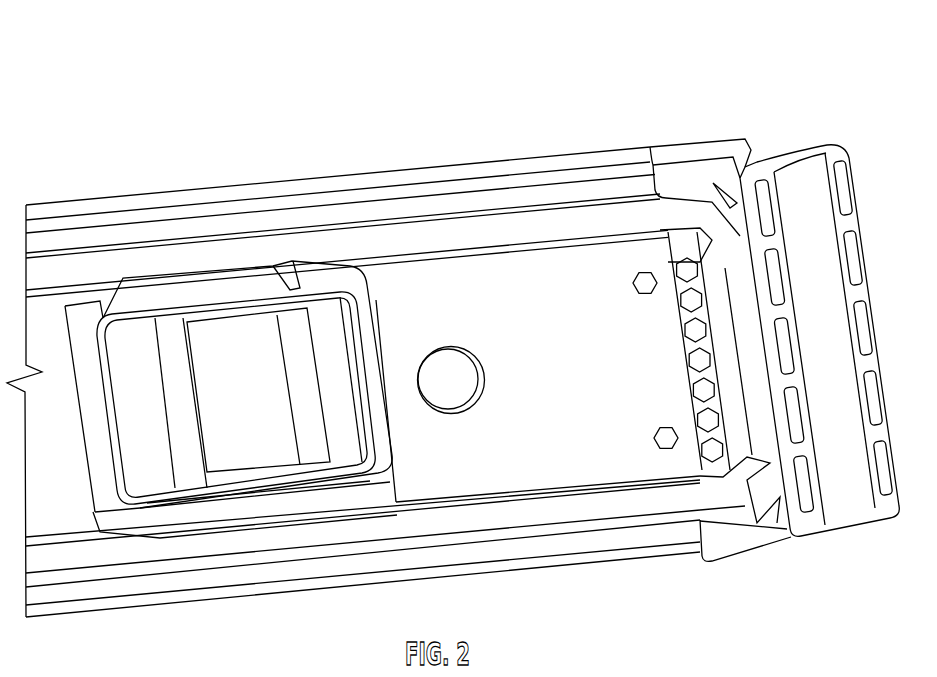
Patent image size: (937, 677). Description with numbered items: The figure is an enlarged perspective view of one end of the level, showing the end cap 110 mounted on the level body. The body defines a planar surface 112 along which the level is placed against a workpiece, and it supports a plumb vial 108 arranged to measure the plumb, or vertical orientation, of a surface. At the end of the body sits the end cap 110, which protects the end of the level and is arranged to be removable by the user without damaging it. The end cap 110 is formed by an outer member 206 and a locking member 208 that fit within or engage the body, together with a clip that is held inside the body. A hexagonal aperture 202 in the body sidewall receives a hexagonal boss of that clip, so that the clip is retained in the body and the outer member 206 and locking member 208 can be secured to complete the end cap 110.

The end cap 110 is at (832, 77).
The planar surface 112 is at (295, 195).
The plumb vial 108 is at (243, 390).
The hexagonal aperture 202 is at (636, 292).
The outer member 206 is at (832, 148).
The locking member 208 is at (836, 422).